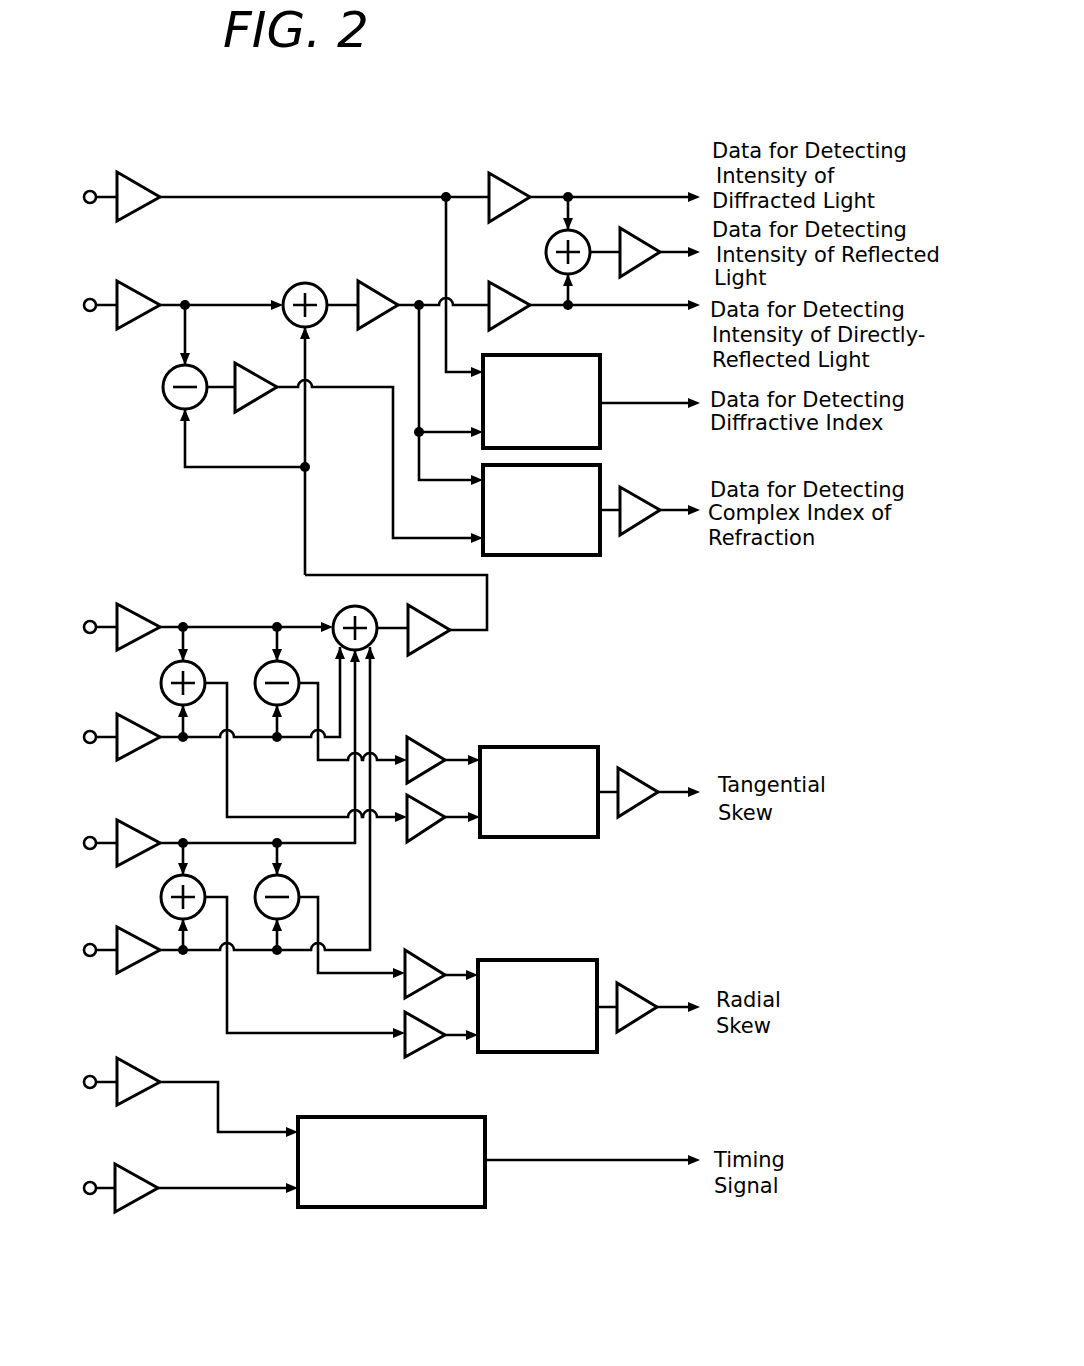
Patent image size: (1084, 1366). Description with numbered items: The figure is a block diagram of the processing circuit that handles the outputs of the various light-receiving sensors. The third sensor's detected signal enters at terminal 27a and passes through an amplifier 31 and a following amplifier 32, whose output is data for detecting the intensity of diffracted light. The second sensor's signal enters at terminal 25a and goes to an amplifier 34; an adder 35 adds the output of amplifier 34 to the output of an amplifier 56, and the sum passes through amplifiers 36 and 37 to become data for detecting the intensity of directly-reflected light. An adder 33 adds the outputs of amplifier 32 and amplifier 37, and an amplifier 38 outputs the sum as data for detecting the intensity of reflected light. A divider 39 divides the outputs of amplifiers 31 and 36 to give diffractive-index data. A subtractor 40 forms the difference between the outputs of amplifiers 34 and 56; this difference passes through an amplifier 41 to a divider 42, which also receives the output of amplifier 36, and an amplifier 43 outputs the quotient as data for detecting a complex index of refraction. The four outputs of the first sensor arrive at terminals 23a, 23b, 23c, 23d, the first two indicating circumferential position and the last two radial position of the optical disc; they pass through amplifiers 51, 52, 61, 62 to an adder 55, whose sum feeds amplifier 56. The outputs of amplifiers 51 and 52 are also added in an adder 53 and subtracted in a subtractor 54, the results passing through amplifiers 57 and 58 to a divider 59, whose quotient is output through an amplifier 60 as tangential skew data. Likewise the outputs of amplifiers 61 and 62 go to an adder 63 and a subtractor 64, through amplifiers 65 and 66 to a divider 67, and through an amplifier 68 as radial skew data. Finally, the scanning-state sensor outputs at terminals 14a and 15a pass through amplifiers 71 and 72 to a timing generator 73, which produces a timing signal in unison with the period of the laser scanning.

The terminal 27a is at (90, 190).
The terminal 25a is at (90, 298).
The terminal 23a is at (90, 620).
The terminal 23b is at (90, 731).
The terminal 23c is at (90, 837).
The terminal 23d is at (90, 944).
The terminal 14a is at (90, 1076).
The terminal 15a is at (90, 1182).
The amplifier 31 is at (140, 183).
The amplifier 32 is at (498, 177).
The adder 33 is at (546, 253).
The amplifier 34 is at (140, 291).
The adder 35 is at (308, 283).
The amplifier 36 is at (378, 283).
The amplifier 37 is at (512, 322).
The amplifier 38 is at (632, 234).
The divider 39 is at (600, 378).
The subtractor 40 is at (162, 388).
The amplifier 41 is at (253, 402).
The divider 42 is at (545, 556).
The amplifier 43 is at (645, 500).
The amplifier 51 is at (140, 613).
The amplifier 52 is at (145, 752).
The adder 53 is at (205, 666).
The subtractor 54 is at (293, 670).
The adder 55 is at (338, 612).
The amplifier 56 is at (430, 645).
The amplifier 57 is at (430, 828).
The amplifier 58 is at (428, 750).
The divider 59 is at (542, 747).
The amplifier 60 is at (638, 779).
The amplifier 61 is at (140, 830).
The amplifier 62 is at (138, 963).
The adder 63 is at (206, 883).
The subtractor 64 is at (298, 882).
The amplifier 65 is at (428, 1046).
The amplifier 66 is at (426, 962).
The divider 67 is at (540, 960).
The amplifier 68 is at (637, 995).
The amplifier 71 is at (138, 1072).
The amplifier 72 is at (138, 1172).
The timing generator 73 is at (337, 1117).